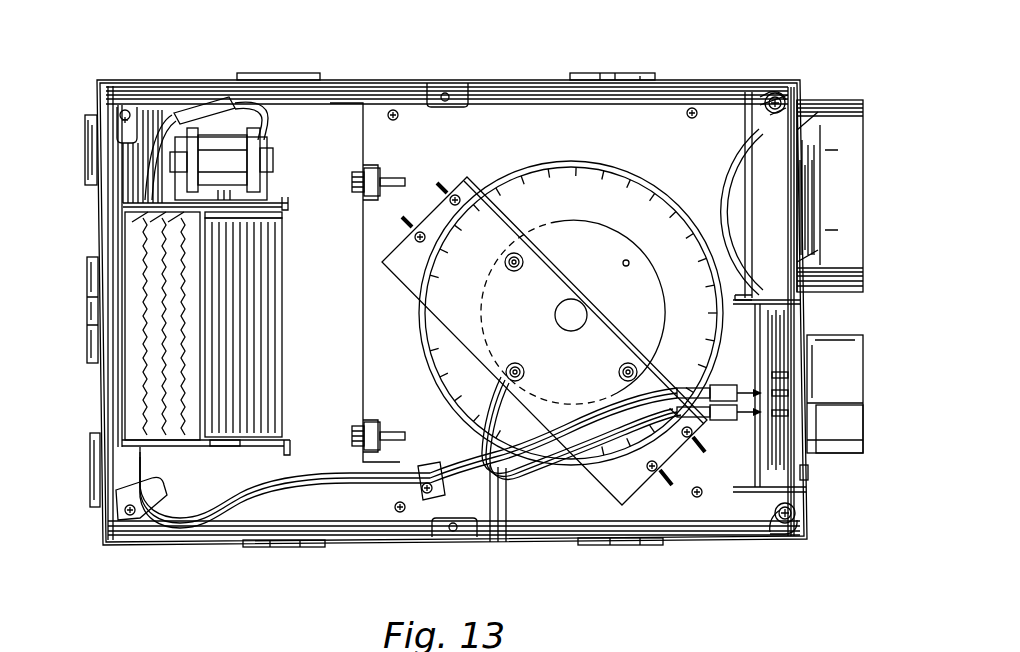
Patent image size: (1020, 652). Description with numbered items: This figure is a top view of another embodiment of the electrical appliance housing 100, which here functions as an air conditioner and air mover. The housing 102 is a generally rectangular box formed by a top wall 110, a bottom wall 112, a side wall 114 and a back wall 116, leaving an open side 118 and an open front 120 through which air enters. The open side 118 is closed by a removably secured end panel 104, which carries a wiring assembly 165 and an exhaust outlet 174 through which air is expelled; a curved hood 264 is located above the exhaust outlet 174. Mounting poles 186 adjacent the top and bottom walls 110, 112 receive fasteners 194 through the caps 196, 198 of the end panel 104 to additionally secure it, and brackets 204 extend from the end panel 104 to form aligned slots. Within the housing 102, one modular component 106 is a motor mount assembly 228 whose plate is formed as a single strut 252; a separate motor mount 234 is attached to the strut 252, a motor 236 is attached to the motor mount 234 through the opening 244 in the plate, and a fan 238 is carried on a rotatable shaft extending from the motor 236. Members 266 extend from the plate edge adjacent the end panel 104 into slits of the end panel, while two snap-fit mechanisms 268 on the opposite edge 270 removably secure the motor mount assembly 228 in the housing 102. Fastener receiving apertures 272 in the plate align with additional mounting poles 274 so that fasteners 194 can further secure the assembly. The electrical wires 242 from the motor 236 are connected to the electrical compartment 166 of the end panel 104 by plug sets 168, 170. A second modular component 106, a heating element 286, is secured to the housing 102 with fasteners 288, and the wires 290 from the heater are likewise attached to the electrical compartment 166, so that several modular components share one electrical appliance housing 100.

The electrical appliance housing 100 is at (803, 52).
The housing 102 is at (192, 72).
The end panel 104 is at (797, 137).
The modular component 106 is at (183, 455).
The top wall 110 is at (539, 541).
The bottom wall 112 is at (515, 78).
The side wall 114 is at (97, 225).
The back wall 116 is at (324, 361).
The open side 118 is at (815, 472).
The open front 120 is at (349, 538).
The wiring assembly 165 is at (872, 423).
The electrical compartment 166 is at (857, 360).
The plug set 168 is at (788, 411).
The plug set 170 is at (686, 386).
The exhaust outlet 174 is at (870, 123).
The mounting pole 186 is at (745, 98).
The fastener 194 is at (397, 114).
The cap 196 is at (780, 540).
The cap 198 is at (750, 92).
The bracket 204 is at (86, 122).
The motor mount assembly 228 is at (559, 103).
The motor mount 234 is at (592, 492).
The motor 236 is at (592, 230).
The fan 238 is at (667, 208).
The electrical wires 242 is at (496, 543).
The opening 244 is at (547, 160).
The strut 252 is at (488, 225).
The curved hood 264 is at (772, 218).
The member 266 is at (800, 302).
The snap-fit mechanism 268 is at (352, 176).
The edge 270 is at (345, 302).
The fastener receiving aperture 272 is at (397, 122).
The mounting pole 274 is at (455, 84).
The heating element 286 is at (142, 372).
The fastener 288 is at (126, 110).
The wires 290 is at (218, 527).